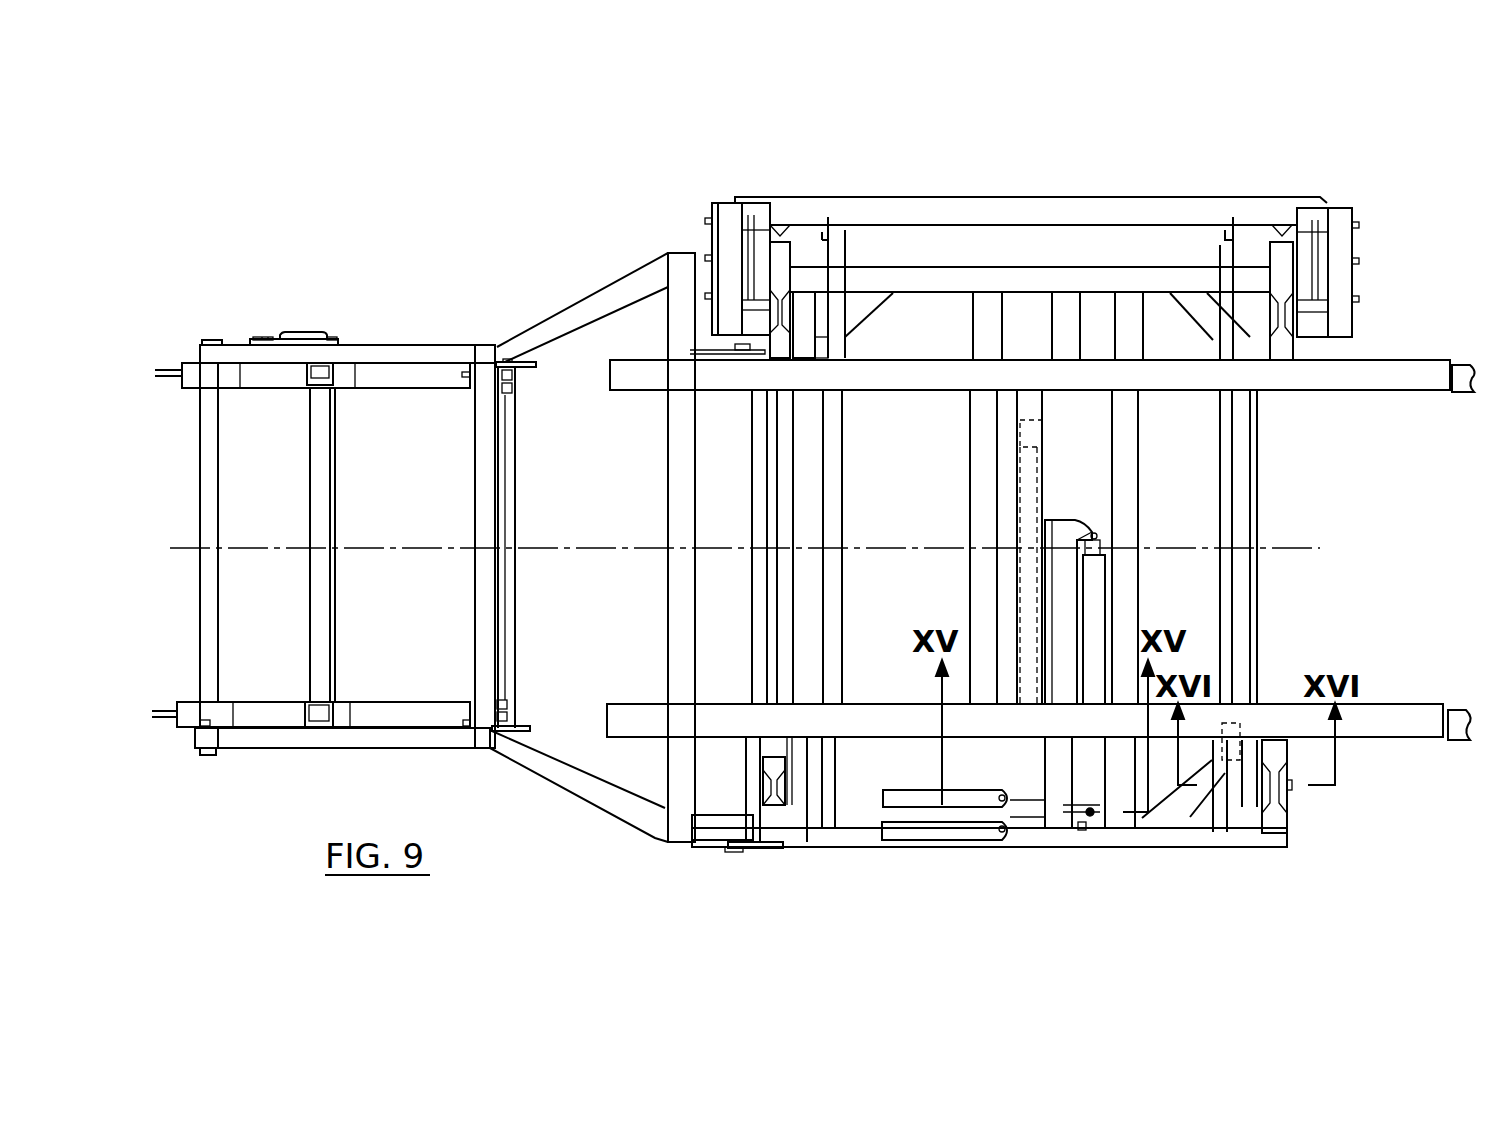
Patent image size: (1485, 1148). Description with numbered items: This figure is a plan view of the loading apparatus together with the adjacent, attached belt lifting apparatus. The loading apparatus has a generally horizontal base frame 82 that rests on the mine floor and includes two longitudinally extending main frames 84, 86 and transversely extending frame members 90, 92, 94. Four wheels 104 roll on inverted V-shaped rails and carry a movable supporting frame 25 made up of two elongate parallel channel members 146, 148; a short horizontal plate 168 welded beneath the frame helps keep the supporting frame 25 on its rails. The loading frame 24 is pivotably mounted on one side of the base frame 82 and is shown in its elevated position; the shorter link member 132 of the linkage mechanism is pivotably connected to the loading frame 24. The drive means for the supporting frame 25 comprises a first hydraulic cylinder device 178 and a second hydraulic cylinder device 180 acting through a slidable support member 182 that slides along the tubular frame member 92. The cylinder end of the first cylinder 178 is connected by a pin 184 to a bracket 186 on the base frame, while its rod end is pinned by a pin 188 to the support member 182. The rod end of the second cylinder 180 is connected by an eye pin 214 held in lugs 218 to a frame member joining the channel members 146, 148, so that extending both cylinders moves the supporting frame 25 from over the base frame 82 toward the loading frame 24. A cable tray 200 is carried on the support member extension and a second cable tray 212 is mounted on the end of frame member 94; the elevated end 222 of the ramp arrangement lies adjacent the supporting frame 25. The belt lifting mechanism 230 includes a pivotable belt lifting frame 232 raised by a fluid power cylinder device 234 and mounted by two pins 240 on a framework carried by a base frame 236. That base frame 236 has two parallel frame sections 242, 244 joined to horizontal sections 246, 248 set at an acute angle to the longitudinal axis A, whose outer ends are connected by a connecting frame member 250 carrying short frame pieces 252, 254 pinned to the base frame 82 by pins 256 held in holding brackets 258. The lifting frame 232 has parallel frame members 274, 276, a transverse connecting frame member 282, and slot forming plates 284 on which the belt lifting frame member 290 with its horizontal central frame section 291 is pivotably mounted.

The loading frame 24 is at (1046, 197).
The supporting frame 25 is at (1357, 392).
The base frame 82 is at (1190, 842).
The main frame 84 is at (932, 279).
The main frame 86 is at (1040, 848).
The transverse frame member 90 is at (1128, 589).
The transverse frame member 92 is at (1075, 450).
The transverse frame member 94 is at (976, 440).
The wheels 104 is at (1300, 338).
The link member 132 is at (718, 246).
The channel member 146 is at (1422, 368).
The channel member 148 is at (1352, 740).
The horizontal plate 168 is at (1240, 724).
The first hydraulic cylinder device 178 is at (1110, 622).
The second hydraulic cylinder device 180 is at (1025, 597).
The slidable support member 182 is at (1040, 568).
The pin 184 is at (1092, 818).
The bracket 186 is at (1092, 520).
The pin 188 is at (1100, 534).
The cable tray 200 is at (887, 790).
The second cable tray 212 is at (918, 840).
The eye pin 214 is at (1012, 452).
The lugs 218 is at (1035, 422).
The elevated end 222 is at (1460, 710).
The belt lifting mechanism 230 is at (320, 470).
The belt lifting frame 232 is at (425, 356).
The fluid power cylinder device 234 is at (300, 331).
The base frame 236 is at (388, 712).
The pins 240 is at (213, 340).
The frame section 242 is at (410, 372).
The frame section 244 is at (432, 724).
The horizontal section 246 is at (568, 782).
The horizontal section 248 is at (575, 318).
The connecting frame member 250 is at (678, 458).
The frame piece 252 is at (705, 817).
The frame piece 254 is at (725, 370).
The pins 256 is at (700, 344).
The holding brackets 258 is at (728, 852).
The frame member 274 is at (315, 730).
The frame member 276 is at (357, 346).
The connecting frame member 282 is at (482, 600).
The slot forming plate 284 is at (528, 368).
The belt lifting frame member 290 is at (506, 452).
The horizontal central frame section 291 is at (508, 582).
The longitudinal axis A is at (560, 540).